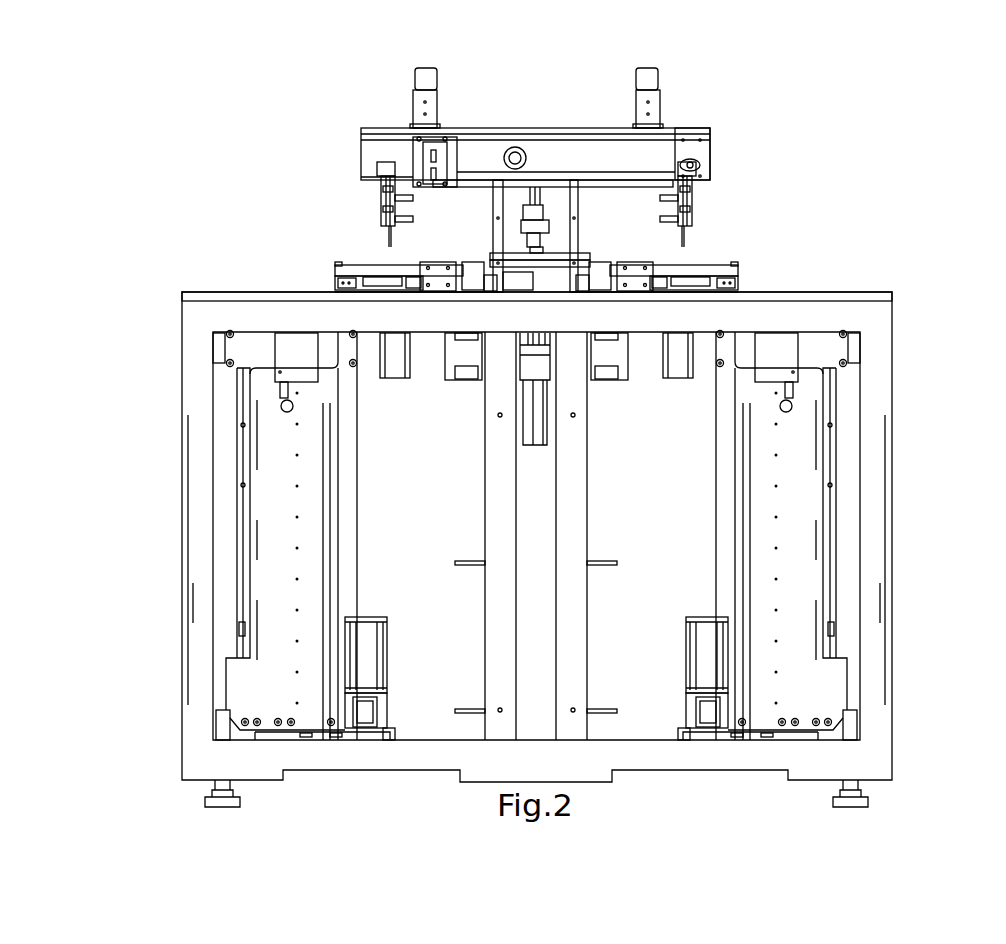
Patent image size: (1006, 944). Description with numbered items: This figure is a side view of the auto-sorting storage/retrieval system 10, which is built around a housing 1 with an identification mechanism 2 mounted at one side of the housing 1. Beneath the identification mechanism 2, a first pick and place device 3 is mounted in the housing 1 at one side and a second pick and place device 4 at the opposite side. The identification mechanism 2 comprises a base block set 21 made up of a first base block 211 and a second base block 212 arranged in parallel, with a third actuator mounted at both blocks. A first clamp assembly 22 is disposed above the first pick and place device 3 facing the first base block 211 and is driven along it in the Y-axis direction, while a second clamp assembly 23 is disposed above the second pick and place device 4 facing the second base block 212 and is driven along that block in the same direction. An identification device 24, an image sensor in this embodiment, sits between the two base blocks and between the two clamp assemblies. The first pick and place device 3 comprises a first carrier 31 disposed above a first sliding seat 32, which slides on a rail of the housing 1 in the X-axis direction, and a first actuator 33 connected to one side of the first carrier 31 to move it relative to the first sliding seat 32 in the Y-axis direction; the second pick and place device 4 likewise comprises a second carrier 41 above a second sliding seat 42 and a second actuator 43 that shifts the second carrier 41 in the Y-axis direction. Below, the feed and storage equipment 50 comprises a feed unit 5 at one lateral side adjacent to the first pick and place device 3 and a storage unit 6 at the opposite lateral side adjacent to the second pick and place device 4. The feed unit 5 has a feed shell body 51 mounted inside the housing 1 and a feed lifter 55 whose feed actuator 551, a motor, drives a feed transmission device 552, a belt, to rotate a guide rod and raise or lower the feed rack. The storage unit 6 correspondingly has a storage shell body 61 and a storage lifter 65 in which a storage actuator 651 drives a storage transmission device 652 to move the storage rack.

The housing 1 is at (892, 380).
The auto-sorting storage/retrieval system 10 is at (880, 292).
The identification mechanism 2 is at (523, 128).
The base block set 21 is at (563, 127).
The first base block 211 is at (468, 140).
The second base block 212 is at (652, 157).
The first clamp assembly 22 is at (377, 198).
The second clamp assembly 23 is at (697, 207).
The identification device 24 is at (560, 252).
The first pick and place device 3 is at (352, 267).
The first carrier 31 is at (393, 270).
The first sliding seat 32 is at (397, 292).
The first actuator 33 is at (473, 270).
The second pick and place device 4 is at (723, 263).
The second carrier 41 is at (690, 270).
The second sliding seat 42 is at (688, 292).
The second actuator 43 is at (598, 270).
The feed unit 5 is at (273, 528).
The feed and storage equipment 50 is at (232, 437).
The feed shell body 51 is at (272, 615).
The feed lifter 55 is at (382, 615).
The feed actuator 551 is at (367, 660).
The feed transmission device 552 is at (313, 738).
The storage unit 6 is at (802, 510).
The storage shell body 61 is at (798, 602).
The storage lifter 65 is at (690, 612).
The storage actuator 651 is at (707, 665).
The storage transmission device 652 is at (765, 740).